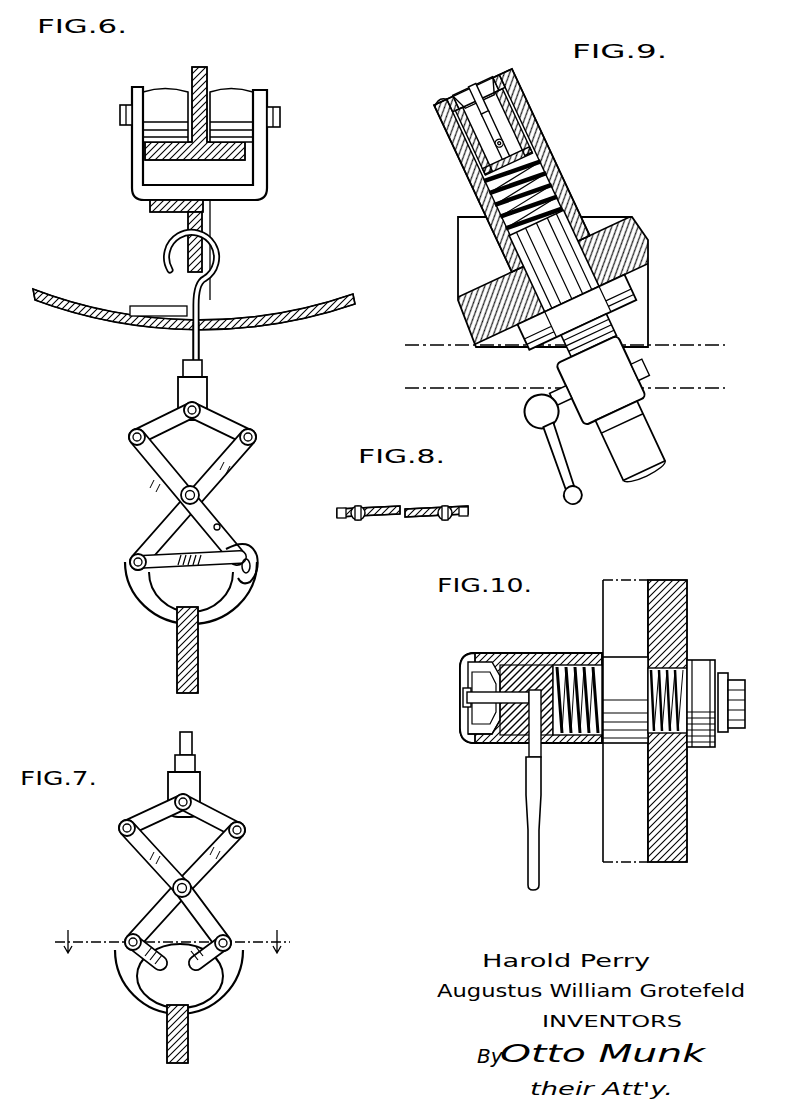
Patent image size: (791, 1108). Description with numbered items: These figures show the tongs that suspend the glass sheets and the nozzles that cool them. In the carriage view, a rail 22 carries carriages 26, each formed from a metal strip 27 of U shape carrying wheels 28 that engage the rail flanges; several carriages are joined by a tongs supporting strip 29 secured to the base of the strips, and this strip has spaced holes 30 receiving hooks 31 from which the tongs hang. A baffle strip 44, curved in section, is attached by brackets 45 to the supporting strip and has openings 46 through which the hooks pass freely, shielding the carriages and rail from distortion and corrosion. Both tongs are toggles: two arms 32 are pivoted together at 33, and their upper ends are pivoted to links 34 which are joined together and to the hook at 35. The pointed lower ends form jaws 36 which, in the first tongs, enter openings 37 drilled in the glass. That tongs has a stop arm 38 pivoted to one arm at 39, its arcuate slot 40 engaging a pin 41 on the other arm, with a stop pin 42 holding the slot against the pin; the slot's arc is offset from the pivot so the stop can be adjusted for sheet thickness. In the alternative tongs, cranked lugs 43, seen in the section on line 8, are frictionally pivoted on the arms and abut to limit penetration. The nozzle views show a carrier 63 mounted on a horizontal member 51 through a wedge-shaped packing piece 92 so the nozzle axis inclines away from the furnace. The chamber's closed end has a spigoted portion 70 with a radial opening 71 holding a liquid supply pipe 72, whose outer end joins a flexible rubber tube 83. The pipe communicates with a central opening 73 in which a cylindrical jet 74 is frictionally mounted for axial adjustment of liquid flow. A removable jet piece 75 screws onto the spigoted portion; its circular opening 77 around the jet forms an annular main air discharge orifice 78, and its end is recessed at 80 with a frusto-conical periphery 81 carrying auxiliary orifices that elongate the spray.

In FIG. 7, the section line 8— 8 is at (172, 929).
In FIG. 6, the rail 22 is at (200, 66).
In FIG. 6, the carriage 26 is at (267, 193).
In FIG. 6, the metal strip of U shape 27 is at (270, 96).
In FIG. 6, the wheel 28 is at (154, 97).
In FIG. 6, the tongs supporting strip 29 is at (190, 219).
In FIG. 6, the spaced hole 30 is at (176, 238).
In FIG. 6, the hook 31 is at (222, 272).
In FIG. 7, the hook 31 is at (192, 740).
In FIG. 6, the arm 32 is at (165, 512).
In FIG. 7, the arm 32 is at (218, 872).
In FIG. 8, the arm 32 is at (365, 520).
In FIG. 6, the pivot 33 is at (200, 495).
In FIG. 7, the pivot 33 is at (172, 887).
In FIG. 6, the link 34 is at (218, 421).
In FIG. 7, the link 34 is at (162, 812).
In FIG. 6, the pivot 35 is at (183, 408).
In FIG. 7, the pivot 35 is at (195, 802).
In FIG. 6, the jaw 36 is at (206, 637).
In FIG. 7, the jaw 36 is at (165, 1032).
In FIG. 6, the opening 37 is at (176, 637).
In FIG. 6, the stop arm 38 is at (190, 564).
In FIG. 6, the pivot 39 is at (130, 562).
In FIG. 6, the slot of arcuate form 40 is at (246, 552).
In FIG. 6, the pin 41 is at (246, 580).
In FIG. 6, the stop pin 42 is at (221, 526).
In FIG. 7, the lug 43 is at (190, 968).
In FIG. 8, the lug 43 is at (410, 508).
In FIG. 6, the baffle strip 44 is at (95, 318).
In FIG. 6, the bracket 45 is at (158, 306).
In FIG. 6, the opening 46 is at (207, 330).
In FIG. 9, the horizontal member 51 is at (460, 380).
In FIG. 9, the nozzle carrier 63 is at (636, 232).
In FIG. 10, the nozzle carrier 63 is at (672, 787).
In FIG. 10, the spigoted portion 70 is at (505, 666).
In FIG. 10, the radial opening 71 is at (555, 745).
In FIG. 10, the liquid supply pipe 72 is at (533, 755).
In FIG. 10, the central cylindrical opening 73 is at (545, 665).
In FIG. 10, the jet 74 is at (467, 698).
In FIG. 10, the jet piece 75 is at (482, 655).
In FIG. 10, the circular opening 77 is at (470, 690).
In FIG. 10, the main air discharge orifice 78 is at (470, 712).
In FIG. 10, the recess 80 is at (470, 726).
In FIG. 10, the frusto-conical part 81 is at (462, 670).
In FIG. 10, the flexible rubber tube 83 is at (527, 843).
In FIG. 9, the packing piece 92 is at (470, 262).